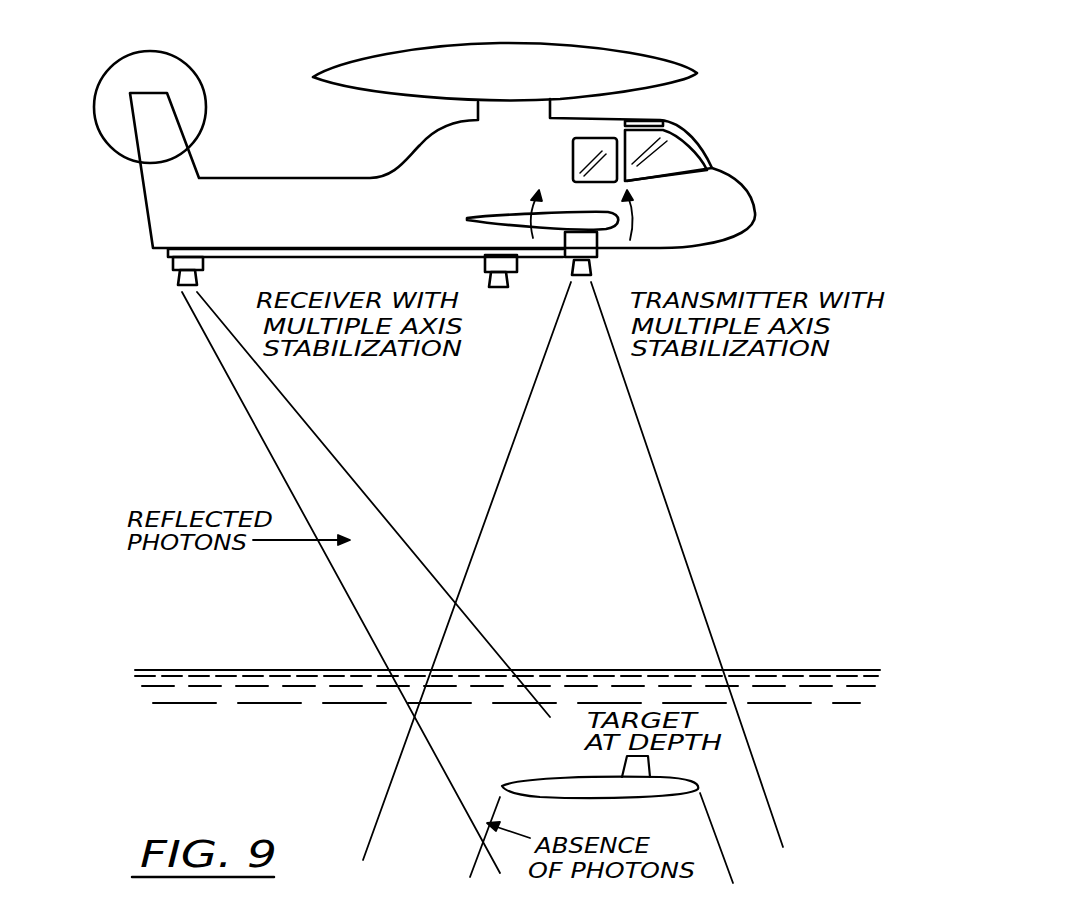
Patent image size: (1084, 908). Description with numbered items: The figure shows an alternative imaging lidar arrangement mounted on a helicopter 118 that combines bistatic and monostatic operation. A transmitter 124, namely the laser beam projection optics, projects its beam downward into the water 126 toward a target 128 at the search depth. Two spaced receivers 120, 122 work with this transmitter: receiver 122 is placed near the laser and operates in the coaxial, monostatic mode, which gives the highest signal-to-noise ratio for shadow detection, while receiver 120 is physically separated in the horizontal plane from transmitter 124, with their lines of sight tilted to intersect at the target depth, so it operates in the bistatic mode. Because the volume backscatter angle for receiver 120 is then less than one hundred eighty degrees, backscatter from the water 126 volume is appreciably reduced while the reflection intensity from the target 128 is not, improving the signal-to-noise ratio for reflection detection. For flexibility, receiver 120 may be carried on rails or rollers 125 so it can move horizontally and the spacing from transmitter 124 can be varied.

The helicopter 118 is at (747, 198).
The receiver 120 is at (171, 261).
The receiver 122 is at (485, 262).
The transmitter 124 is at (598, 256).
The rails or rollers 125 is at (386, 257).
The water 126 is at (747, 670).
The target 128 is at (632, 797).